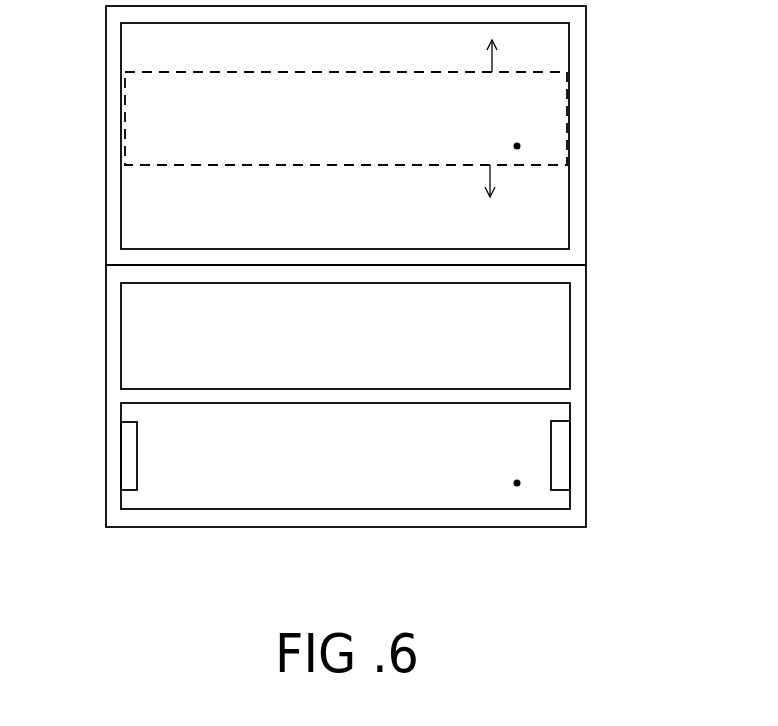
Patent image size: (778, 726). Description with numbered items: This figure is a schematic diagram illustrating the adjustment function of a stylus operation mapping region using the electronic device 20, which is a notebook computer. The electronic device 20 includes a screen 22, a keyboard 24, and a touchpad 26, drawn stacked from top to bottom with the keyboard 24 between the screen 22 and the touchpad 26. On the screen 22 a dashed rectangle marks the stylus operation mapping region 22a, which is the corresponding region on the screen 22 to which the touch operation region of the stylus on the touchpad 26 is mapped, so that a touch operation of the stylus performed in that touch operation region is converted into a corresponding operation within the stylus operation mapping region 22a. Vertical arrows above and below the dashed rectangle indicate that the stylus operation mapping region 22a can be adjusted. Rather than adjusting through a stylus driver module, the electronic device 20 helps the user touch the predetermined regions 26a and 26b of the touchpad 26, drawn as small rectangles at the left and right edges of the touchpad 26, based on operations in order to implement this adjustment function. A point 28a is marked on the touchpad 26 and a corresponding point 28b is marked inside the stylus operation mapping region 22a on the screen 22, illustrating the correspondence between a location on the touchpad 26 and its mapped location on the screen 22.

The electronic device 20 is at (586, 232).
The screen 22 is at (569, 196).
The stylus operation mapping region 22a is at (568, 97).
The keyboard 24 is at (570, 331).
The touchpad 26 is at (570, 412).
The predetermined region 26a is at (128, 458).
The predetermined region 26b is at (560, 458).
The touch point on touchpad 28a is at (517, 483).
The mapped point on screen 28b is at (517, 146).